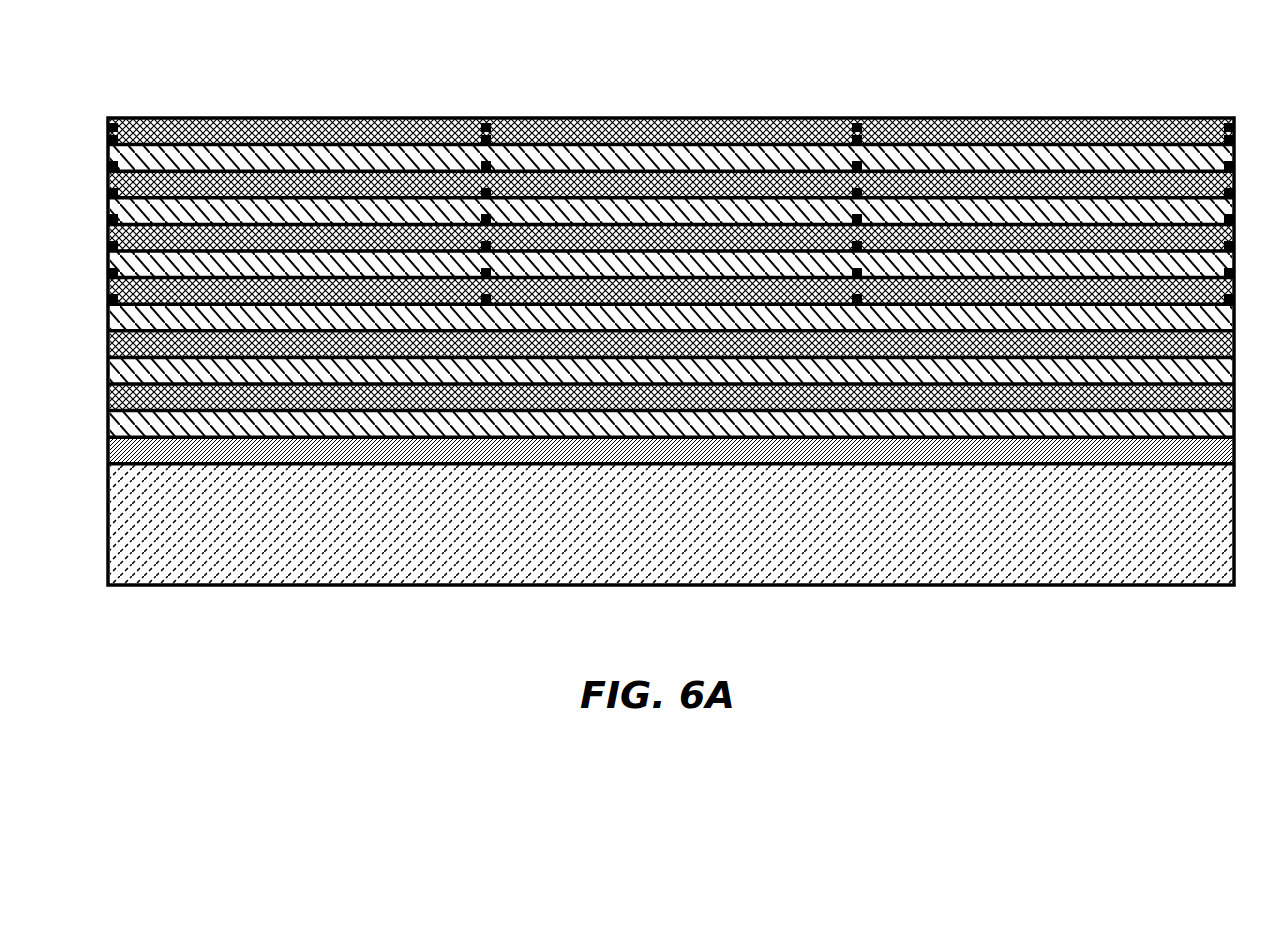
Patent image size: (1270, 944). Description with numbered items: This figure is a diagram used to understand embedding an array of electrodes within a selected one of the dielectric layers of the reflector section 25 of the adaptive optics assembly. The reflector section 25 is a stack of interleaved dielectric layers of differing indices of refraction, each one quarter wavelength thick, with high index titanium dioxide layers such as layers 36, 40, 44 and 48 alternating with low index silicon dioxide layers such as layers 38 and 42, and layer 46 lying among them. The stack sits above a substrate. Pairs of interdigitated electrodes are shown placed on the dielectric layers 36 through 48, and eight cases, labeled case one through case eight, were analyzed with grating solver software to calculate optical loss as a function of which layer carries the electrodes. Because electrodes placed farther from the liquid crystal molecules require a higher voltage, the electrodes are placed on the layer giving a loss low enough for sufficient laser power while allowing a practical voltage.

The reflector section 25 is at (643, 338).
The dielectric layer 36 is at (173, 300).
The dielectric layer 38 is at (227, 267).
The dielectric layer 40 is at (279, 240).
The dielectric layer 42 is at (324, 212).
The dielectric layer 44 is at (362, 180).
The dielectric layer 46 is at (406, 162).
The dielectric layer 48 is at (452, 132).